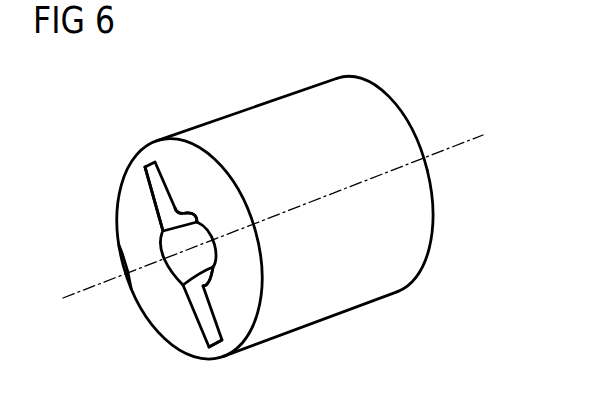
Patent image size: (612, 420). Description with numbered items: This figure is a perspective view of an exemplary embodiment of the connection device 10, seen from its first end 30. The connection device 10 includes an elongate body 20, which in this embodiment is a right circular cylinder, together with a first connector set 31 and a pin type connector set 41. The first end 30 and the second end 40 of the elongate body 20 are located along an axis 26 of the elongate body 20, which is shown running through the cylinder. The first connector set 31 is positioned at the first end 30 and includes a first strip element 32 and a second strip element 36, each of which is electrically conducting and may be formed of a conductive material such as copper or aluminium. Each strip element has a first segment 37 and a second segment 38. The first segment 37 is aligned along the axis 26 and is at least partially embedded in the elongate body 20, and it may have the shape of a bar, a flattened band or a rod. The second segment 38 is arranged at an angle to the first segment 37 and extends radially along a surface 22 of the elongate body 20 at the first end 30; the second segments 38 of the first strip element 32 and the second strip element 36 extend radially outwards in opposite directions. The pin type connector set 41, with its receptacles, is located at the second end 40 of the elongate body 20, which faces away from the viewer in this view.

The connection device 10 is at (305, 220).
The elongate body 20 is at (402, 266).
The surface 22 is at (125, 193).
The axis 26 is at (482, 137).
The first end 30 is at (156, 139).
The first connector set 31 is at (152, 211).
The first strip element 32 is at (164, 172).
The second strip element 36 is at (218, 350).
The first segment 37 is at (207, 207).
The second segment 38 is at (136, 205).
The second end 40 is at (346, 75).
The pin type connector set 41 is at (419, 126).